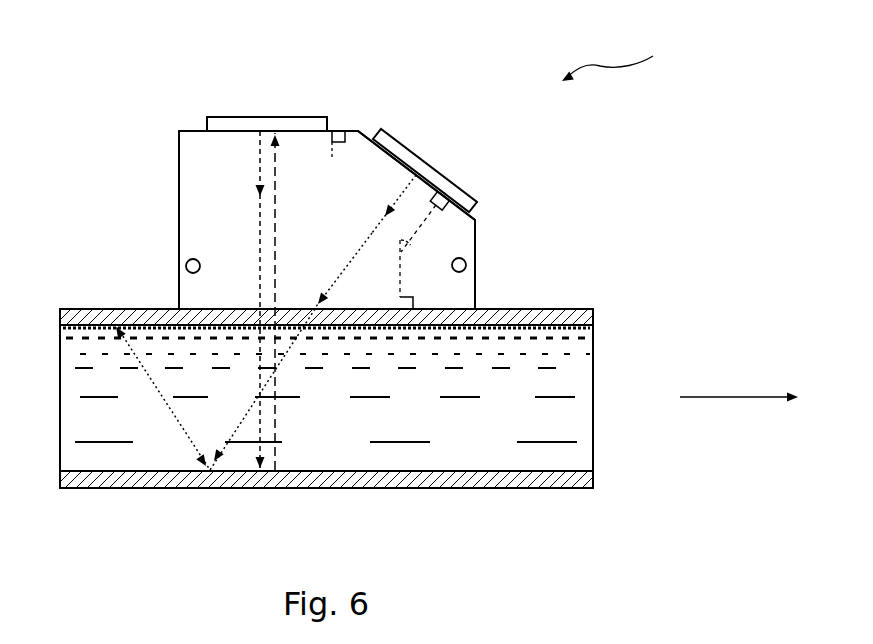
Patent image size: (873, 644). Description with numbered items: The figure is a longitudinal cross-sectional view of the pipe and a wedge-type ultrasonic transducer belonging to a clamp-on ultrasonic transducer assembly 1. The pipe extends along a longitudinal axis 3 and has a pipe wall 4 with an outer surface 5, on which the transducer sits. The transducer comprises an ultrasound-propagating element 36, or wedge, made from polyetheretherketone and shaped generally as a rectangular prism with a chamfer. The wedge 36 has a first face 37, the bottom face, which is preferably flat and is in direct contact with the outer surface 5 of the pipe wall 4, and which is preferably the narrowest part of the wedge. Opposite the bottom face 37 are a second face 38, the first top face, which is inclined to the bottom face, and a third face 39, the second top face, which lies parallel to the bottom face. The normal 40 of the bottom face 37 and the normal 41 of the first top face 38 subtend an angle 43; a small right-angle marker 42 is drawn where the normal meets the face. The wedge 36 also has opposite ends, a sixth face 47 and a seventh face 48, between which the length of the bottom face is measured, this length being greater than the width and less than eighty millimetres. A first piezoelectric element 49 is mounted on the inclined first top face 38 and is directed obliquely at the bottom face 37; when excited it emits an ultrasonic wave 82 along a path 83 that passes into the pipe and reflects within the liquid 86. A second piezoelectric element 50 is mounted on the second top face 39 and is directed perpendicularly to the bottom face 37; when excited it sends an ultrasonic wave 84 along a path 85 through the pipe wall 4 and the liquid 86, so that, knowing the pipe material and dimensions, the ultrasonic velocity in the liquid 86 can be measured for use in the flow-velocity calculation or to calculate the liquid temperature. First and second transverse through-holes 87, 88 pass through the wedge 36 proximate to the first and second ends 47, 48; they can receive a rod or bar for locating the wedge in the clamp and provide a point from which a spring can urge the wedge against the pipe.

The clamp-on ultrasonic transducer assembly 1 is at (616, 60).
The longitudinal axis 3 is at (740, 400).
The pipe wall 4 is at (546, 484).
The outer surface 5 is at (67, 304).
The ultrasound-propagating element 36 is at (179, 156).
The first face 37 is at (480, 310).
The second face 38 is at (360, 129).
The third face 39 is at (192, 125).
The normal of the bottom face 40 is at (399, 278).
The normal of the first top face 41 is at (425, 223).
The right angle marker 42 is at (331, 152).
The angle 43 is at (419, 262).
The sixth face 47 is at (168, 232).
The seventh face 48 is at (486, 233).
The first piezoelectric element 49 is at (390, 138).
The second piezoelectric element 50 is at (222, 117).
The ultrasonic wave 82 is at (398, 196).
The path 83 is at (366, 238).
The ultrasonic wave 84 is at (257, 172).
The path 85 is at (257, 222).
The liquid 86 is at (578, 412).
The first transverse through-hole 87 is at (467, 265).
The second transverse through-hole 88 is at (186, 266).